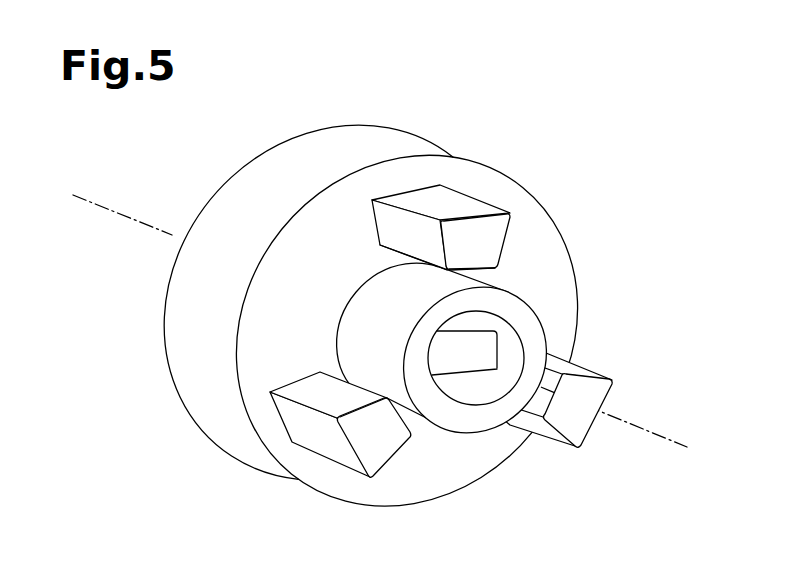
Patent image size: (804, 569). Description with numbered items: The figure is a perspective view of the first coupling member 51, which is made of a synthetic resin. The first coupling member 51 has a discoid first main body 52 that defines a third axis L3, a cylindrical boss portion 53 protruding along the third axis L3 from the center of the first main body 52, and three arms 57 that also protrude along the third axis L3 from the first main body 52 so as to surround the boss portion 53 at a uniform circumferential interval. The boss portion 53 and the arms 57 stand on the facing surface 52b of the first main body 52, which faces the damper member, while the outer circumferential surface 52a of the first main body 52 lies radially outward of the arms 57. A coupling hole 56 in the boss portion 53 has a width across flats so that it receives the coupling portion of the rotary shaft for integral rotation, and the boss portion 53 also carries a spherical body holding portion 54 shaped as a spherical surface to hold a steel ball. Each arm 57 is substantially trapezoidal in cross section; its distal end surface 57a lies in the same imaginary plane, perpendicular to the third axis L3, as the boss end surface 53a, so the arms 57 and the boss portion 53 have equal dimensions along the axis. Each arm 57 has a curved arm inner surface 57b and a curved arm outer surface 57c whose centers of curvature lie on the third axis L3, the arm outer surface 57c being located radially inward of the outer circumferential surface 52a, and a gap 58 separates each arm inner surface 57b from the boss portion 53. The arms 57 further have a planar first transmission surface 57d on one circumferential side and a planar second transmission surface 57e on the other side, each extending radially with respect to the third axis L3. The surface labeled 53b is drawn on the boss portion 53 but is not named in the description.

The first coupling member 51 is at (552, 149).
The first main body 52 is at (381, 327).
The outer circumferential surface 52a is at (176, 343).
The facing surface 52b is at (257, 298).
The boss portion 53 is at (452, 320).
The boss end surface 53a is at (428, 348).
The outer peripheral surface of hub 53b is at (368, 297).
The spherical body holding portion 54 is at (457, 398).
The coupling hole 56 is at (494, 349).
The arm 57 is at (452, 320).
The distal end surface 57a is at (447, 242).
The arm inner surface 57b is at (530, 405).
The arm outer surface 57c is at (402, 188).
The first transmission surface 57d is at (384, 212).
The second transmission surface 57e is at (302, 386).
The gap 58 is at (480, 274).
The third axis L3 is at (110, 212).